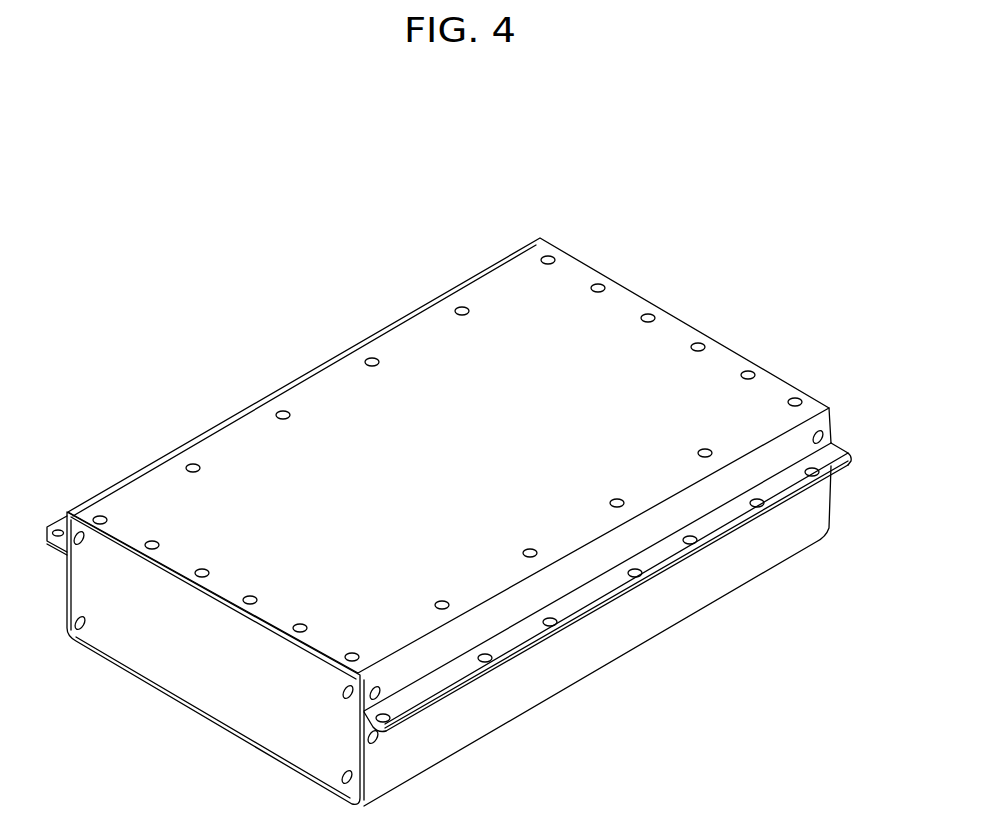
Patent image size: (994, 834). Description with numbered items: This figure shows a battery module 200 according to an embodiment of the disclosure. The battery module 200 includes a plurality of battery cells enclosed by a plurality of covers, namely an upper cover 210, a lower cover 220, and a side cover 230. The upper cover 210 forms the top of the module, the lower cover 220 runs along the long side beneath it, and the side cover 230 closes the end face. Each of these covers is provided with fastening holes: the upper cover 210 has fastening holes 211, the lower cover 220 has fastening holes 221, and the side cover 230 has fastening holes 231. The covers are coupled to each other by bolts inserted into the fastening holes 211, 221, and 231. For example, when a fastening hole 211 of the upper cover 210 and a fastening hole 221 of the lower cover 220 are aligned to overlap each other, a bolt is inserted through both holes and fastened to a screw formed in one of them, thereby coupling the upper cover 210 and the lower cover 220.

The battery module 200 is at (494, 229).
The upper cover 210 is at (834, 425).
The fastening hole 211 is at (332, 663).
The lower cover 220 is at (834, 489).
The fastening hole 221 is at (376, 740).
The side cover 230 is at (203, 698).
The fastening hole 231 is at (345, 779).